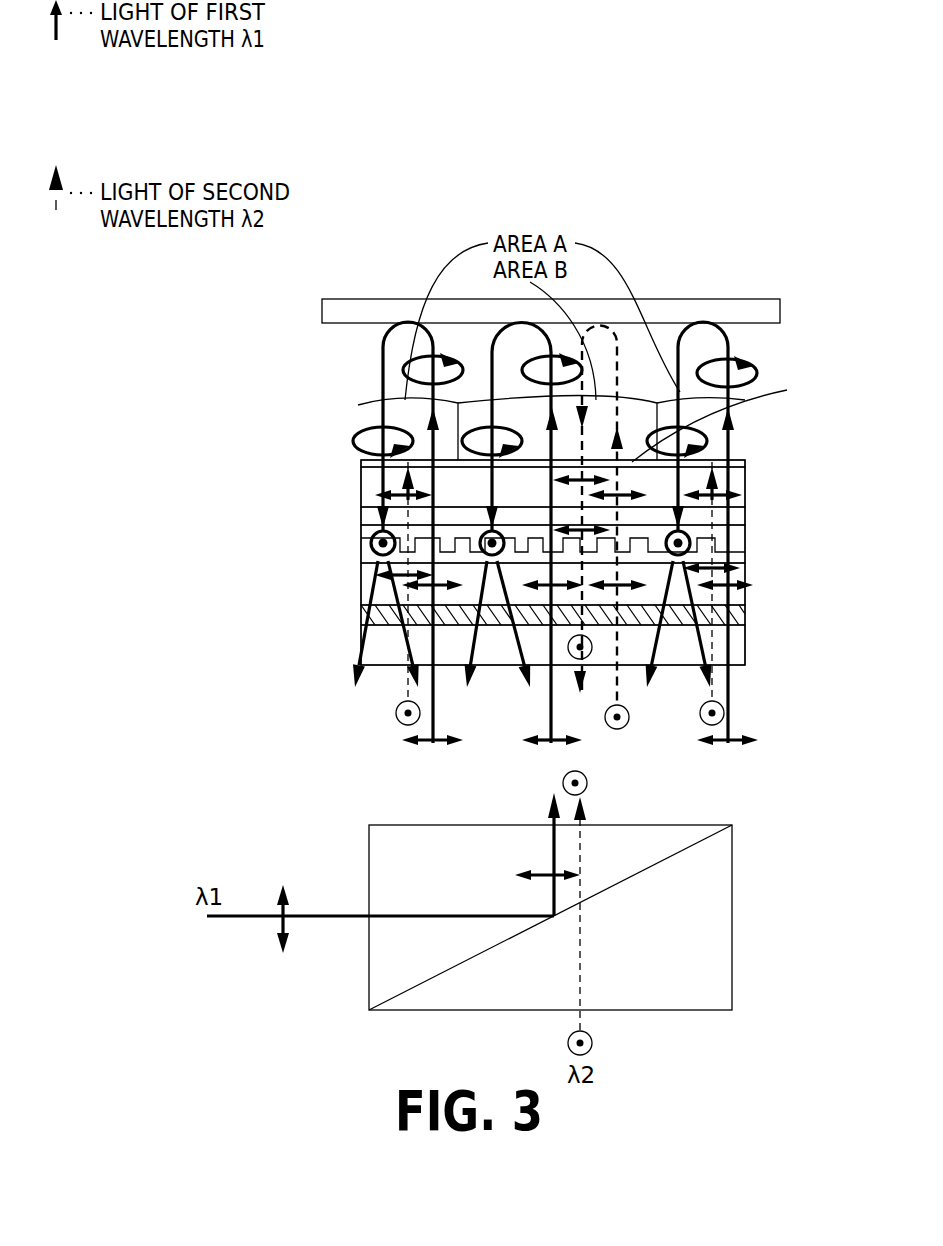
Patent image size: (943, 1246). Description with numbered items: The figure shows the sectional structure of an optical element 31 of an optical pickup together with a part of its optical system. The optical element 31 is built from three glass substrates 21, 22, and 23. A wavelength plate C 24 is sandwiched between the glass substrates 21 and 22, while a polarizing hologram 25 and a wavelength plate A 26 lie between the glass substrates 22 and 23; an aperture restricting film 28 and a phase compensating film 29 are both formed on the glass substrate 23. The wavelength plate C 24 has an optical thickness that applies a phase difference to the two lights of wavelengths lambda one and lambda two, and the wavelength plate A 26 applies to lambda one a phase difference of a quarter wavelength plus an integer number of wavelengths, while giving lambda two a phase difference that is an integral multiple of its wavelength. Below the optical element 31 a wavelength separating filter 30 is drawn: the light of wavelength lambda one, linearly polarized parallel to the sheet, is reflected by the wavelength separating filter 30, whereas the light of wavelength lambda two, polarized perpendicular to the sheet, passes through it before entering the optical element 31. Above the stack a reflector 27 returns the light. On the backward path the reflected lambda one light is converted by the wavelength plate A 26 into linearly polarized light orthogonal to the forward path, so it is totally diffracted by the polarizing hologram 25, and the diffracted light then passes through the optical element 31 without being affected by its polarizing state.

The glass substrate 21 is at (745, 650).
The glass substrate 22 is at (745, 592).
The glass substrate 23 is at (745, 482).
The wavelength plate C 24 is at (745, 613).
The polarizing hologram 25 is at (758, 525).
The wavelength plate A 26 is at (745, 515).
The reflector 27 is at (778, 296).
The aperture restricting film 28 is at (733, 458).
The phase compensating film 29 is at (722, 413).
The wavelength separating filter 30 is at (675, 853).
The optical element 31 is at (832, 460).